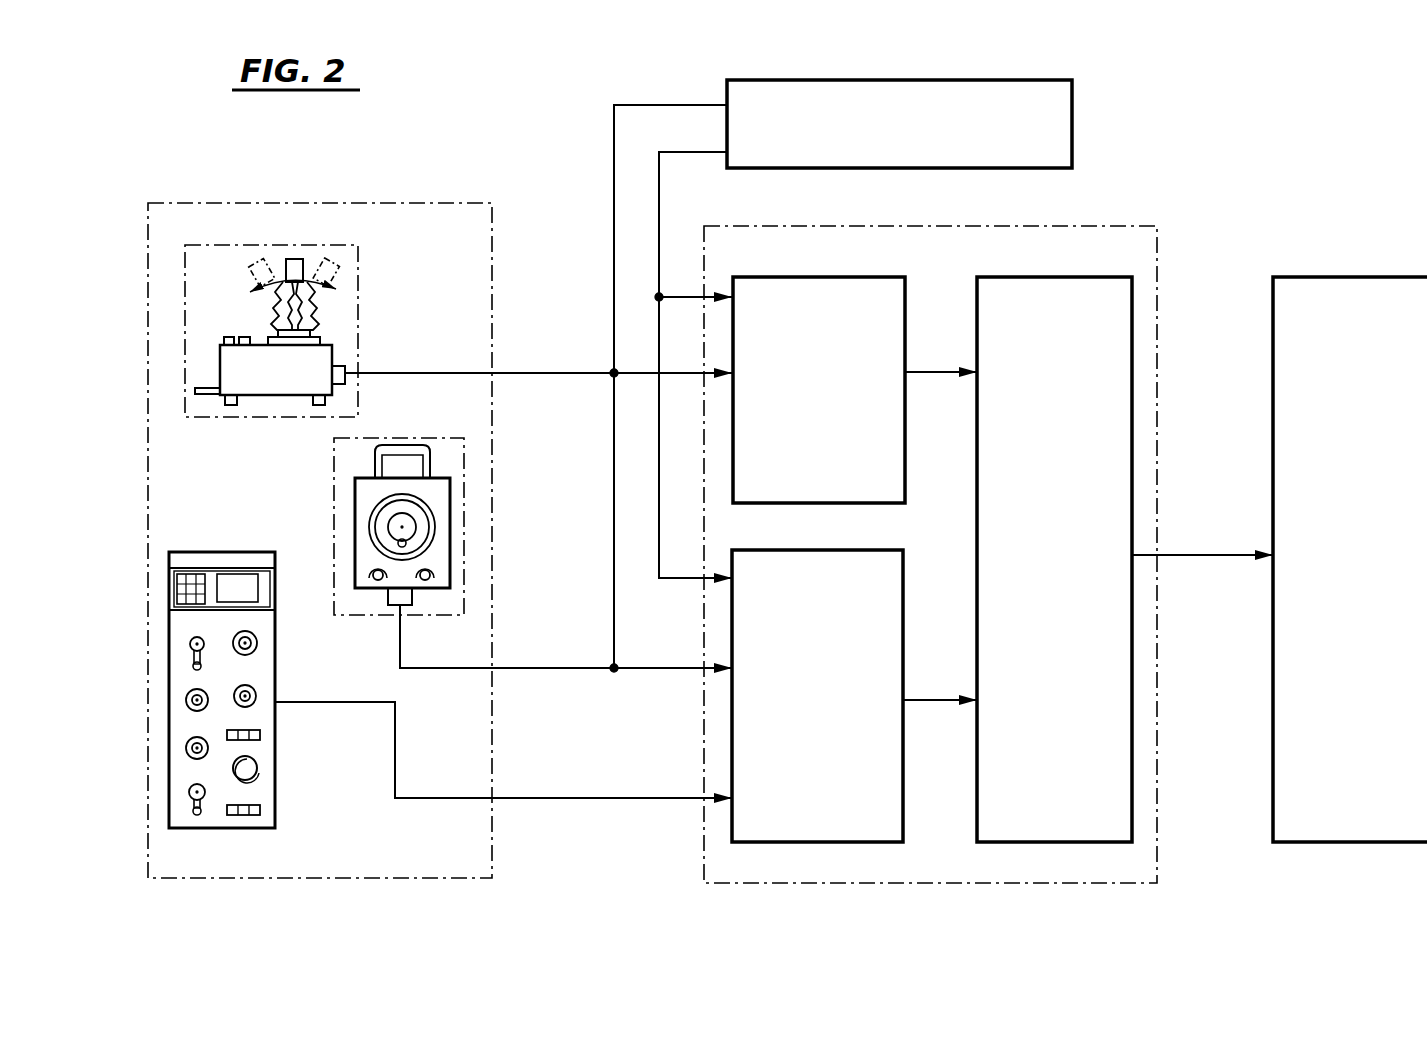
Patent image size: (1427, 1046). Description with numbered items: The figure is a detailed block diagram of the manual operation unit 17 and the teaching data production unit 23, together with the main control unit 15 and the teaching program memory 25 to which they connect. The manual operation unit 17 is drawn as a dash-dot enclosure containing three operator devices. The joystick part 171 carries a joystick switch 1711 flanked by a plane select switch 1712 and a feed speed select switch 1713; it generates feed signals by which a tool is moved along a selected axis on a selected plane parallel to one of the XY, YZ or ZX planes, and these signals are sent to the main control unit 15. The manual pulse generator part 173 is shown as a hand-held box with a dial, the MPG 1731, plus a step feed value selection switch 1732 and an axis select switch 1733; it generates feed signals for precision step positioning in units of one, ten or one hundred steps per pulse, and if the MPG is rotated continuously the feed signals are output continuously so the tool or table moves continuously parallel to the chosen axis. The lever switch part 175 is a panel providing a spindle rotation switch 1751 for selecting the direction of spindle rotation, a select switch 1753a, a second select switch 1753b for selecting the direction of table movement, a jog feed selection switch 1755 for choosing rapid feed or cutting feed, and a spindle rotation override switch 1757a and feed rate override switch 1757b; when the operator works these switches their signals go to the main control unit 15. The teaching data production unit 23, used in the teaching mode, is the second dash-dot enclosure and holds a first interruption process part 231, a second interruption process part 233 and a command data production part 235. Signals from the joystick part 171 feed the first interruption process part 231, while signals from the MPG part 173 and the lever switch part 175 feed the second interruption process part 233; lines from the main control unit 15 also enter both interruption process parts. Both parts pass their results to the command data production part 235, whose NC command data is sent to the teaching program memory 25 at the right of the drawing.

The main control unit 15 is at (1072, 135).
The manual operation unit 17 is at (258, 203).
The joystick part 171 is at (364, 300).
The joystick switch 1711 is at (292, 259).
The plane select switch 1712 is at (244, 337).
The feed speed select switch 1713 is at (224, 337).
The manual pulse generator (MPG) part 173 is at (450, 510).
The MPG 1731 is at (416, 527).
The step feed value selection switch 1732 is at (378, 582).
The axis select switch 1733 is at (428, 582).
The lever switch part 175 is at (236, 552).
The spindle rotation switch 1751 is at (190, 644).
The select switch 1753a is at (186, 700).
The second select switch 1753b is at (186, 748).
The jog feed selection switch 1755 is at (189, 792).
The spindle rotation override switch 1757a is at (257, 650).
The feed rate override switch 1757b is at (257, 694).
The teaching data production unit 23 is at (1110, 226).
The first interruption process part 231 is at (818, 277).
The second interruption process part 233 is at (805, 842).
The command data production part 235 is at (1078, 277).
The teaching program memory 25 is at (1343, 277).